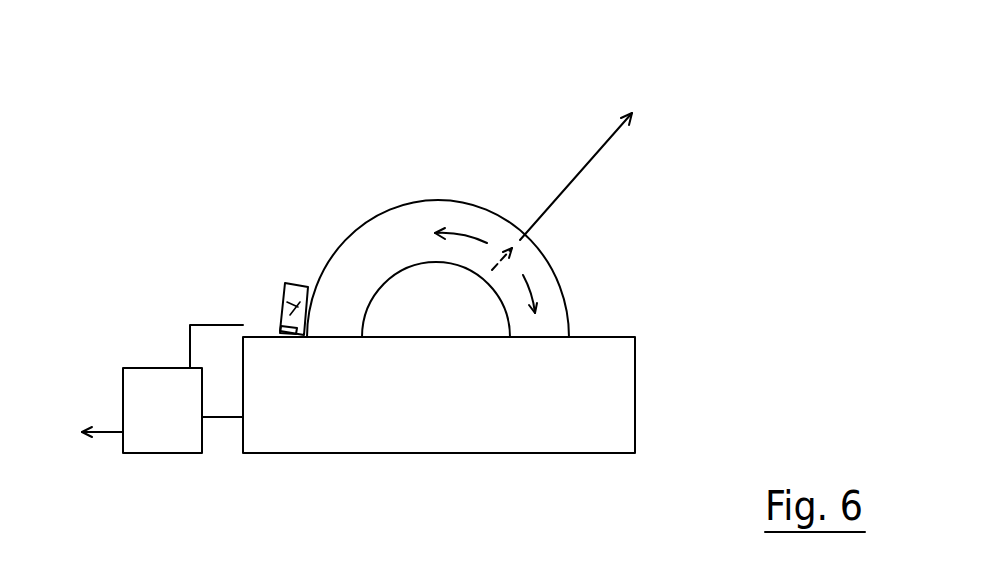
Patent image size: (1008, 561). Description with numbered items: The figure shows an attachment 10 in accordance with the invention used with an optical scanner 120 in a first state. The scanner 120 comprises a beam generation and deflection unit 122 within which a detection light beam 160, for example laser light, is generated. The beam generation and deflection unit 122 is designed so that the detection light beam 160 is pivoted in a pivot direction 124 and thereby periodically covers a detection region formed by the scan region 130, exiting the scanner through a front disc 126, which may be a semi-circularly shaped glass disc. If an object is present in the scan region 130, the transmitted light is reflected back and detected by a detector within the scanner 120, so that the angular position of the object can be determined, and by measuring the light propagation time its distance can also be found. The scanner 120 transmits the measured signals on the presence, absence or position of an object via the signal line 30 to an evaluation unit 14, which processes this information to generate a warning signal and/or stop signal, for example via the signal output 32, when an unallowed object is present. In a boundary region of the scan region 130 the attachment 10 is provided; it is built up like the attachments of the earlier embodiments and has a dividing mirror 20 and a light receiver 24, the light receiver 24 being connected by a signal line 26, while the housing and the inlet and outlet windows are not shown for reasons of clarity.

The attachment 10 is at (258, 275).
The evaluation unit 14 is at (150, 442).
The dividing mirror 20 is at (284, 303).
The light receiver 24 is at (292, 334).
The signal line 26 is at (215, 325).
The signal line 30 is at (222, 418).
The signal output 32 is at (113, 432).
The optical scanner 120 is at (702, 313).
The beam generation and deflection unit 122 is at (415, 262).
The pivot direction 124 is at (462, 233).
The front disc 126 is at (361, 223).
The scan region 130 is at (503, 41).
The detection light 160 is at (570, 183).